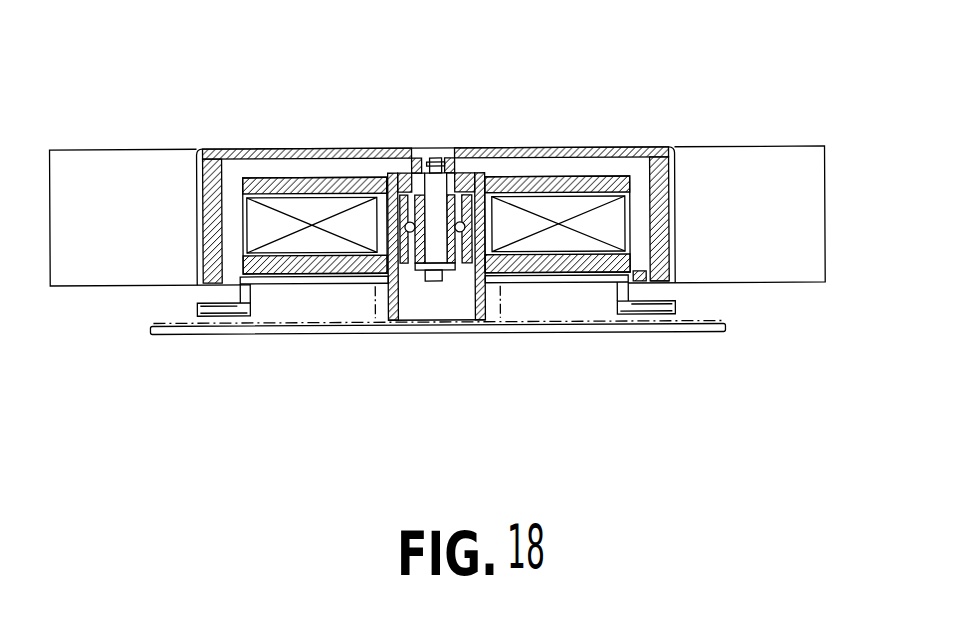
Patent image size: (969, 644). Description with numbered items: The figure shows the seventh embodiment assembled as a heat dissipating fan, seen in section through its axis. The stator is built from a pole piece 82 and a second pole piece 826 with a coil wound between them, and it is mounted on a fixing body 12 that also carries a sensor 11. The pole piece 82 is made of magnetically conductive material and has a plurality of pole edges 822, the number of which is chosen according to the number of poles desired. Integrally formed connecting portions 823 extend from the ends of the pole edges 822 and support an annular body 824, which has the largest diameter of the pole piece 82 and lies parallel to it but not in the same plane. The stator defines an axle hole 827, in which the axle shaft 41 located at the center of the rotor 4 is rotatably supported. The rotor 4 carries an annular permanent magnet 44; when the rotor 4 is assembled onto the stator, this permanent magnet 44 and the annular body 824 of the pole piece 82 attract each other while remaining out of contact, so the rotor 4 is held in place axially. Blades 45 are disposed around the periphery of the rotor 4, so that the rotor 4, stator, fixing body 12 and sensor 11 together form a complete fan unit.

The rotor 4 is at (686, 150).
The blades 45 is at (157, 163).
The annular permanent magnet 44 is at (662, 282).
The axle shaft 41 is at (436, 283).
The pole piece 82 is at (507, 270).
The pole edges 822 is at (267, 281).
The connecting portions 823 is at (258, 300).
The annular body 824 is at (197, 314).
The pole piece 826 is at (572, 160).
The axle hole 827 is at (463, 188).
The sensor 11 is at (650, 290).
The fixing body 12 is at (727, 331).